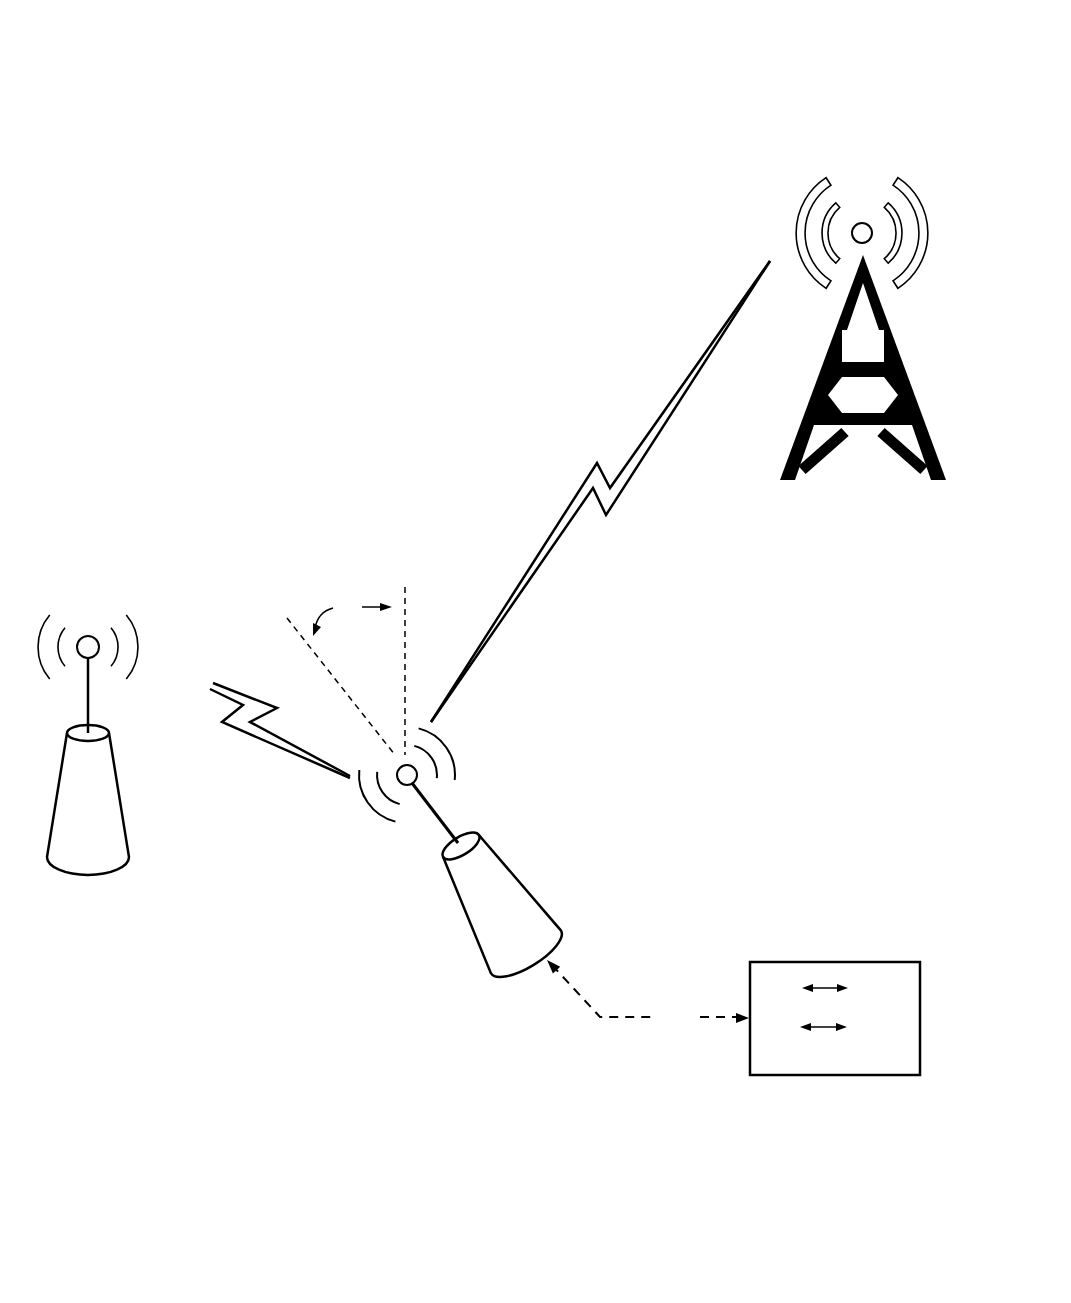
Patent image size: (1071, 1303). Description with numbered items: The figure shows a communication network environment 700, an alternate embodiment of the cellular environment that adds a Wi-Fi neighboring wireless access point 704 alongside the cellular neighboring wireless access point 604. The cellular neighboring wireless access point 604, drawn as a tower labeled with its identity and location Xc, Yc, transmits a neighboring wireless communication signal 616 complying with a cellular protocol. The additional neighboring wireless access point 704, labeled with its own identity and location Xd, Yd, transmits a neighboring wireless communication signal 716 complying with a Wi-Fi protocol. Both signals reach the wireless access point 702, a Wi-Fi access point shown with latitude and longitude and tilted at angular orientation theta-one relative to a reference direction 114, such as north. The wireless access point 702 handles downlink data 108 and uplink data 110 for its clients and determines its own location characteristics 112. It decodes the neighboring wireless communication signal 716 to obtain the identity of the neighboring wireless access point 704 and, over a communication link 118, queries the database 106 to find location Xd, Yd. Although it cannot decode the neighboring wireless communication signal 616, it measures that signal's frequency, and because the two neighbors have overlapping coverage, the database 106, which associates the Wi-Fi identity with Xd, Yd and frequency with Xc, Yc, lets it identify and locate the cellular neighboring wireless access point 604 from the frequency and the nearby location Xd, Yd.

The communication network environment 700 is at (92, 72).
The cellular neighboring wireless access point 604 is at (846, 447).
The neighboring wireless communication signal 616 is at (600, 491).
The neighboring wireless communication signal 716 is at (148, 653).
The neighboring wireless access point 704 is at (70, 859).
The wireless access point 702 is at (530, 950).
The reference direction 114 is at (402, 671).
The downlink data 108 is at (473, 932).
The uplink data 110 is at (318, 1038).
The location characteristics 112 is at (318, 1068).
The communication link 118 is at (648, 996).
The database 106 is at (890, 1065).